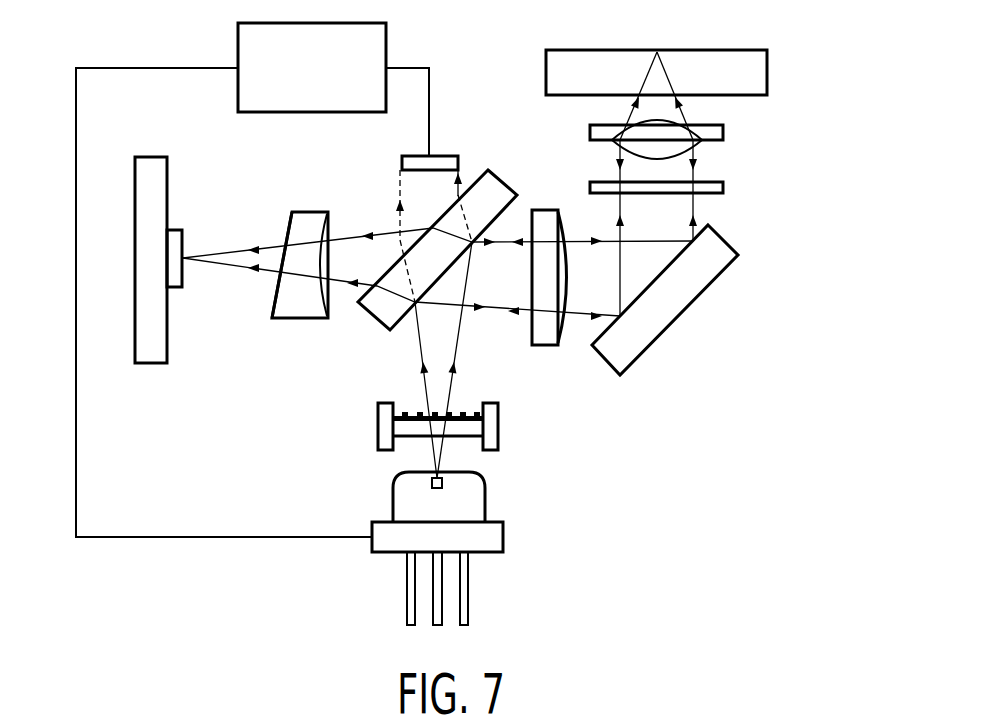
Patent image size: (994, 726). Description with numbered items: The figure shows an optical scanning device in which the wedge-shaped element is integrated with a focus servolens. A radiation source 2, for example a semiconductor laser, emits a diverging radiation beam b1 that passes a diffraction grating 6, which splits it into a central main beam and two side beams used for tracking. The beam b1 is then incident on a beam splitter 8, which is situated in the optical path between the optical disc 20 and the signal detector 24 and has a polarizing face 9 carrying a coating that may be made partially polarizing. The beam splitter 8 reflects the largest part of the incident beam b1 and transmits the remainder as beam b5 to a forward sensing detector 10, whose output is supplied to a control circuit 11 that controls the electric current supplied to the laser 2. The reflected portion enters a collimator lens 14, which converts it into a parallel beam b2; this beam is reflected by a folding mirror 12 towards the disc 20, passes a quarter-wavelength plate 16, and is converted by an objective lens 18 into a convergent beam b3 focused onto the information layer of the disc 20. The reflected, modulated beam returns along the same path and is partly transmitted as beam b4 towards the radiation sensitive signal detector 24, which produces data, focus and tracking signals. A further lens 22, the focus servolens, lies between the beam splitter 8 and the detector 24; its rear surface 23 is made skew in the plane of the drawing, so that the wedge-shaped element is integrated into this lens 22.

The radiation source 2 is at (475, 500).
The diffraction grating 6 is at (498, 428).
The beam splitter 8 is at (385, 311).
The polarizing face 9 is at (402, 327).
The forward sensing detector 10 is at (445, 158).
The control circuit 11 is at (250, 40).
The folding mirror 12 is at (673, 308).
The collimator lens 14 is at (546, 347).
The quarter-wavelength plate 16 is at (723, 188).
The objective lens 18 is at (723, 135).
The optical disc 20 is at (755, 72).
The focus servolens 22 is at (300, 320).
The rear surface 23 is at (267, 300).
The signal detector 24 is at (173, 288).
The diverging radiation beam b1 is at (440, 393).
The parallel beam b2 is at (585, 278).
The convergent beam b3 is at (658, 108).
The reflected beam towards detector b4 is at (263, 258).
The transmitted beam b5 is at (417, 183).